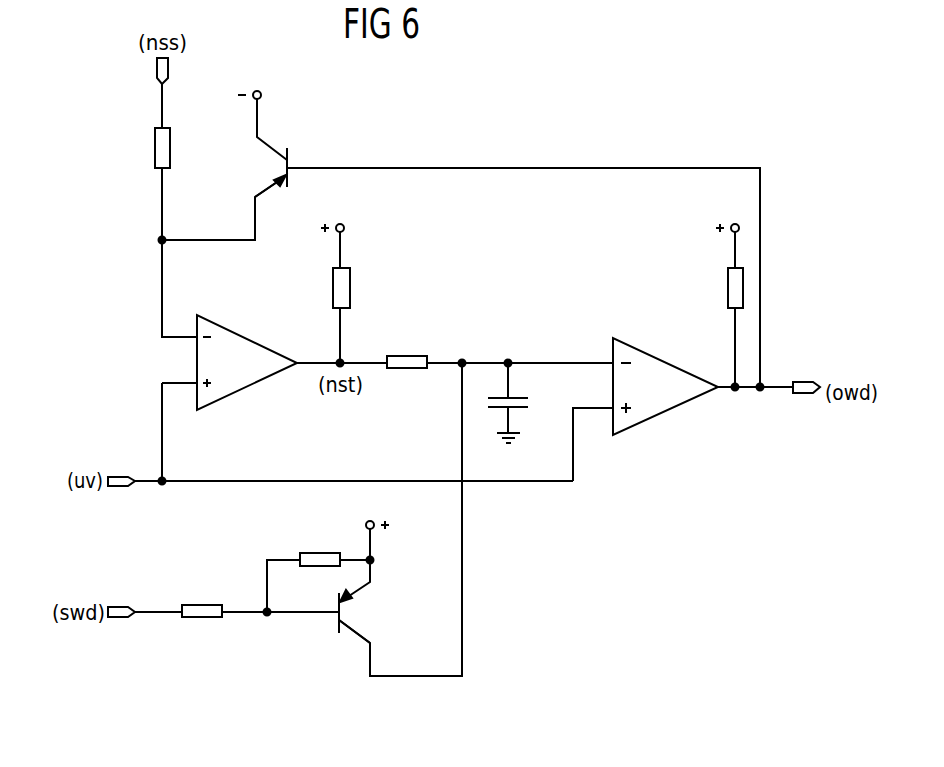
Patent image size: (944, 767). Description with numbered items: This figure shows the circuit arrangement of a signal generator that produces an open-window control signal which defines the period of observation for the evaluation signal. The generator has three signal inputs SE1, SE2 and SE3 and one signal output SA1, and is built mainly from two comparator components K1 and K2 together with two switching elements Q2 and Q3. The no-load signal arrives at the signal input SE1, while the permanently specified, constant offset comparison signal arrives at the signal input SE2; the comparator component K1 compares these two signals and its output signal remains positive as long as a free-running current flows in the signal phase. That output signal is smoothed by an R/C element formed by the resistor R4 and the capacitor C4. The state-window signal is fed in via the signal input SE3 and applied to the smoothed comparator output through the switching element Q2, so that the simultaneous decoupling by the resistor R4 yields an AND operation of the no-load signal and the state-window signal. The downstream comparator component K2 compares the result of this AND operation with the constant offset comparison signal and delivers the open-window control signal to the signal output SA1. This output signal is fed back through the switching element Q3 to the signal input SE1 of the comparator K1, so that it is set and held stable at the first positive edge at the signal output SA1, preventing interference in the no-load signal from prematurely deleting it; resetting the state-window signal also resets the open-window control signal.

The signal input SE1 is at (157, 68).
The signal input SE2 is at (115, 476).
The signal input SE3 is at (115, 606).
The signal output SA1 is at (805, 382).
The switching element Q3 is at (288, 157).
The switching element Q2 is at (336, 625).
The comparator component K1 is at (250, 385).
The comparator component K2 is at (670, 417).
The resistor R4 is at (407, 356).
The capacitor C4 is at (522, 410).